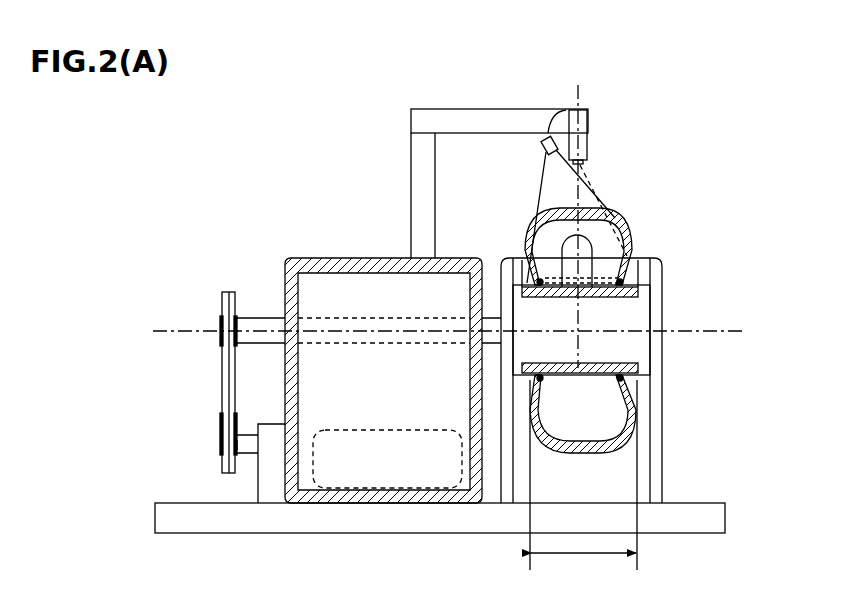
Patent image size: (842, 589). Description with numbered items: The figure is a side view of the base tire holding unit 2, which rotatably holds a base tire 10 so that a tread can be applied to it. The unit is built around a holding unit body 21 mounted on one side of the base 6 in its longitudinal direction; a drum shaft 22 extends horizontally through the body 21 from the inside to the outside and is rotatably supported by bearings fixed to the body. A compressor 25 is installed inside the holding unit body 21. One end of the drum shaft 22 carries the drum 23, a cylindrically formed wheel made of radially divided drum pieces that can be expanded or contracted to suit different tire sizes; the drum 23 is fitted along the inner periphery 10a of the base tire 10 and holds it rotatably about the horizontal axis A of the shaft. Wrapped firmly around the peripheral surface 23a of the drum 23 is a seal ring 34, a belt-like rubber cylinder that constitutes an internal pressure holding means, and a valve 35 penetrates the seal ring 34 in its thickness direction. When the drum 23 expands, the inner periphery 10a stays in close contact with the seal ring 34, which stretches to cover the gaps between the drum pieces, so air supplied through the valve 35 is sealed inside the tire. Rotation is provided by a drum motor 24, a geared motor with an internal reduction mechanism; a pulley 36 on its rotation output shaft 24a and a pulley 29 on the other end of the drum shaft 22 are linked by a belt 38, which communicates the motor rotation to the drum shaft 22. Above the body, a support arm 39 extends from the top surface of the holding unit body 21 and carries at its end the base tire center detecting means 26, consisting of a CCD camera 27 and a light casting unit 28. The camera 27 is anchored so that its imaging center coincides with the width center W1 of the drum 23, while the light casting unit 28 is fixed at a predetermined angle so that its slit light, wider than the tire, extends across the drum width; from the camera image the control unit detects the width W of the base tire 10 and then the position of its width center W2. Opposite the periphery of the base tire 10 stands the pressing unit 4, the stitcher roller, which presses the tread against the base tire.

The base tire holding unit 2 is at (288, 90).
The pressing unit 4 is at (655, 262).
The base 6 is at (705, 501).
The base tire 10 is at (612, 212).
The inner periphery 10a is at (548, 379).
The holding unit body 21 is at (352, 258).
The drum shaft 22 is at (452, 345).
The drum 23 is at (662, 376).
The peripheral surface 23a is at (645, 318).
The drum motor 24 is at (272, 424).
The rotation output shaft 24a is at (249, 446).
The compressor 25 is at (368, 428).
The base tire center detecting means 26 is at (641, 87).
The CCD camera 27 is at (587, 148).
The light casting unit 28 is at (565, 112).
The pulley 29 is at (222, 352).
The seal ring 34 is at (541, 297).
The valve 35 is at (590, 379).
The pulley 36 is at (222, 434).
The belt 38 is at (226, 400).
The support arm 39 is at (470, 108).
The rotation axis A is at (738, 330).
The width W is at (556, 556).
The width center W1 is at (578, 82).
The width center W2 is at (598, 180).